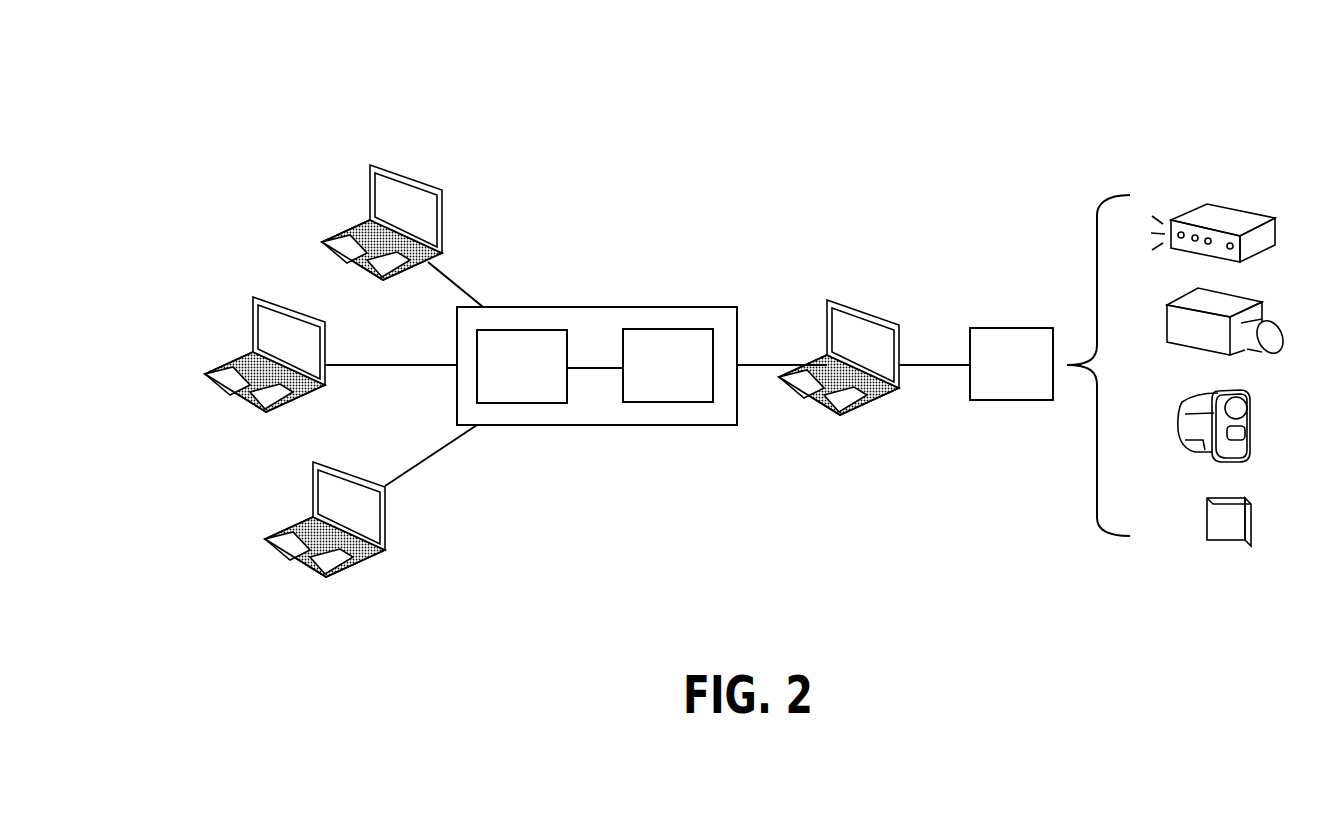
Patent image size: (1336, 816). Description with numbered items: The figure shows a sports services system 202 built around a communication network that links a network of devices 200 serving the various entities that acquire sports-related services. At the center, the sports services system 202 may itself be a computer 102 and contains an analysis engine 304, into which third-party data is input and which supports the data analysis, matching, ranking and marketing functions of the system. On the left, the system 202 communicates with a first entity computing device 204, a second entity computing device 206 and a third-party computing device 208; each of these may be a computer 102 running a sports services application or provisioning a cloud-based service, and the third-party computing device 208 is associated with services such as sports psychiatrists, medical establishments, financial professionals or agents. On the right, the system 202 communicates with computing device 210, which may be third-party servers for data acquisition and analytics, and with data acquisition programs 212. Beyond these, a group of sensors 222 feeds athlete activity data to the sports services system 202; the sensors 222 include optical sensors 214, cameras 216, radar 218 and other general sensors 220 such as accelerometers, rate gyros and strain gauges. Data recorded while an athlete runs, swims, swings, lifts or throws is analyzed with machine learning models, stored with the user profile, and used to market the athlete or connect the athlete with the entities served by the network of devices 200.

The network of devices 200 is at (258, 104).
The sports services system 202 is at (688, 306).
The analysis engine 304 is at (522, 366).
The computer 102 is at (668, 365).
The first entity computing device 204 is at (430, 184).
The second entity computing device 206 is at (217, 385).
The third-party computing device 208 is at (275, 545).
The computing device 210 is at (885, 318).
The data acquisition programs 212 is at (1007, 328).
The optical sensors 214 is at (1267, 216).
The cameras 216 is at (1261, 302).
The radar 218 is at (1251, 402).
The general sensors 220 is at (1252, 522).
The sensors 222 is at (1100, 170).